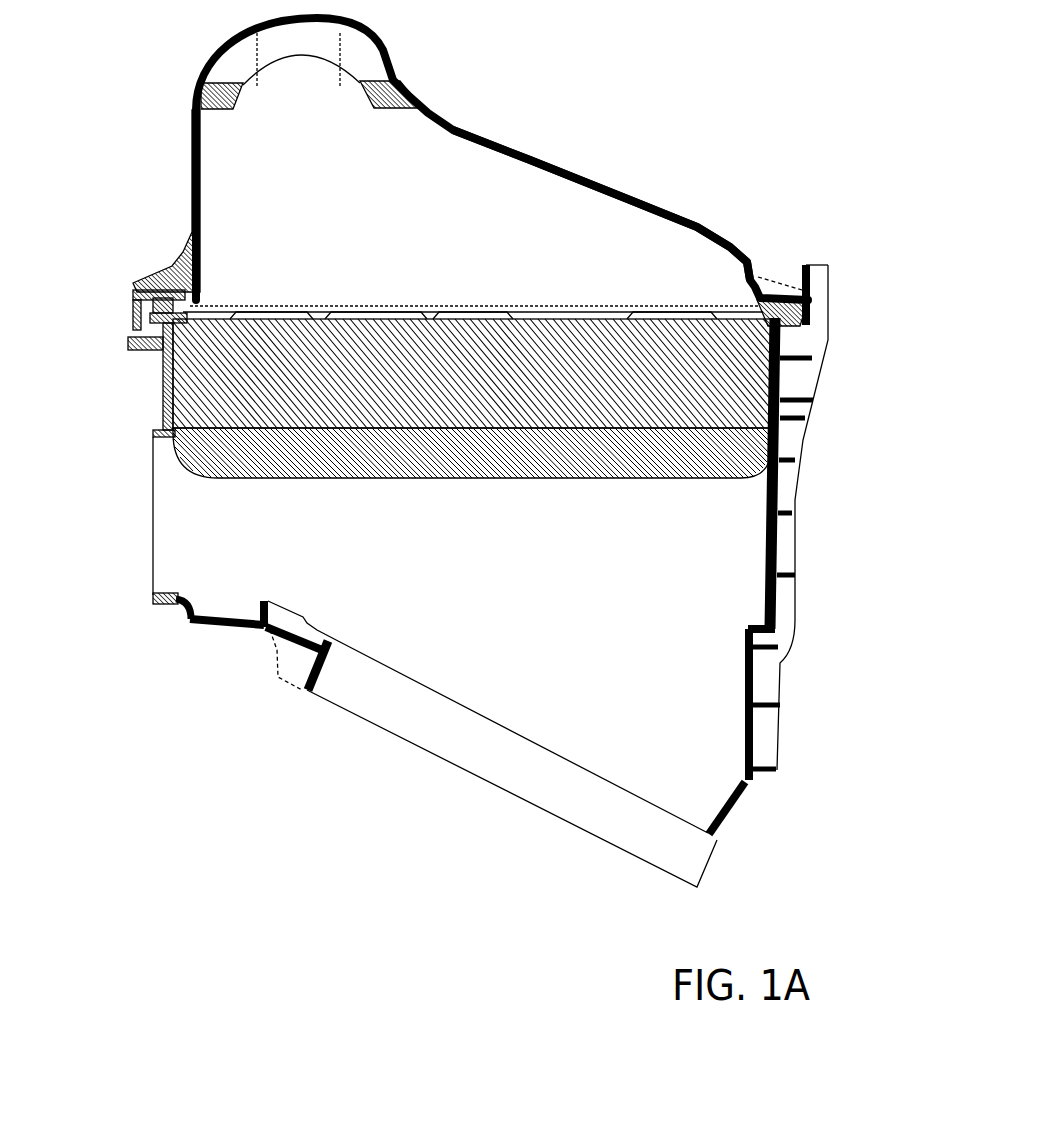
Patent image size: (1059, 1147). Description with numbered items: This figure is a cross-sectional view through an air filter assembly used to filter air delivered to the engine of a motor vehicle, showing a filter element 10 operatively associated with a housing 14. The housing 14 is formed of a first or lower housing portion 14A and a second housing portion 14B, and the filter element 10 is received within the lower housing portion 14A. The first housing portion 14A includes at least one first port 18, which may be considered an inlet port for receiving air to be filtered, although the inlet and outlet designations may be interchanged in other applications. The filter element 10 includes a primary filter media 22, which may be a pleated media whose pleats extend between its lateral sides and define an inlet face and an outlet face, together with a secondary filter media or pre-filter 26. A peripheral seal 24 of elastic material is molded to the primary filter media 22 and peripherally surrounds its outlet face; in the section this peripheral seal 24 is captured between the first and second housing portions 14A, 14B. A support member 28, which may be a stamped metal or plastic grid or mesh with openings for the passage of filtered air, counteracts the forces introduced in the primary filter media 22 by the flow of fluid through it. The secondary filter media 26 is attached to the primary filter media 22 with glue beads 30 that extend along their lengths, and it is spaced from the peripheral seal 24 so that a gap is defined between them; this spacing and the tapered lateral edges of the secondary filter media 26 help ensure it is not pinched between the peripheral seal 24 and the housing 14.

The filter element 10 is at (190, 470).
The housing 14 is at (612, 177).
The first housing portion 14A is at (191, 622).
The second housing portion 14B is at (687, 213).
The first port 18 is at (155, 592).
The primary filter media 22 is at (737, 393).
The peripheral seal 24 is at (793, 310).
The secondary filter media 26 is at (707, 460).
The support member 28 is at (363, 313).
The glue bead 30 is at (782, 399).